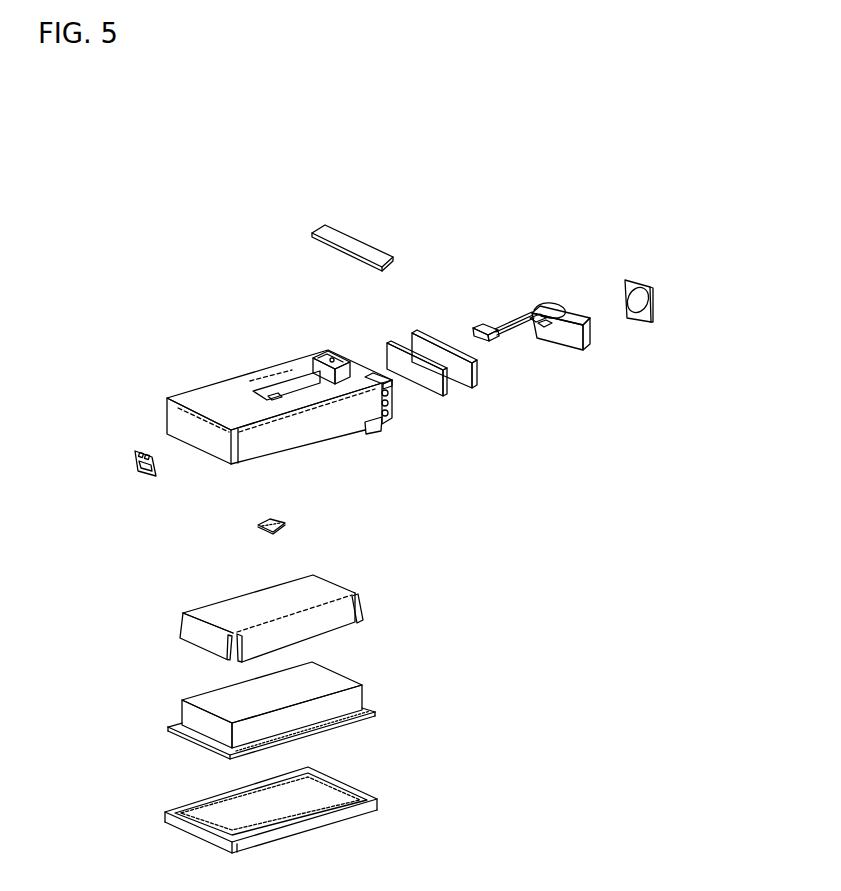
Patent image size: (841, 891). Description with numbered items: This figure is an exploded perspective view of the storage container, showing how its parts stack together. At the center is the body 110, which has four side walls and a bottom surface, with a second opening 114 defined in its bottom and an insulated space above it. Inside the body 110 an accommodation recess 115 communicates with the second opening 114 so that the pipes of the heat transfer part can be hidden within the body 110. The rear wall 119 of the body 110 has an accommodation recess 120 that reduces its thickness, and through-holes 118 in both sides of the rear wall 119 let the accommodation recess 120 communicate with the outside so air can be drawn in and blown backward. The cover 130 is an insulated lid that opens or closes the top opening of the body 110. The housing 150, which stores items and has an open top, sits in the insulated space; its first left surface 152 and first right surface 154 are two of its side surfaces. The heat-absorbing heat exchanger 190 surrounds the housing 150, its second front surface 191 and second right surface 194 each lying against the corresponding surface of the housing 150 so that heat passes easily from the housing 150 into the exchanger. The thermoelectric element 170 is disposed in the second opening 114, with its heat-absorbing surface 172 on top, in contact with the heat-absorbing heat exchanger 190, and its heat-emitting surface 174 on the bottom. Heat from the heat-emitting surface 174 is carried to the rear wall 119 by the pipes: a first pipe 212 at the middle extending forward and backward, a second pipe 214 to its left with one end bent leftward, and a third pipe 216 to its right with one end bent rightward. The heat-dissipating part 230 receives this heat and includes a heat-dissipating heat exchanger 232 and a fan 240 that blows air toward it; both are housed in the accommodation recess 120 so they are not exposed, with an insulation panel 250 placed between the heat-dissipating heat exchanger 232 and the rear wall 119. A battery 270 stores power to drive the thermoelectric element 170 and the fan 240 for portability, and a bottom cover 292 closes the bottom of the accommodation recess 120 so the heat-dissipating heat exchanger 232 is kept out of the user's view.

The body 110 is at (148, 412).
The second opening 114 is at (277, 393).
The accommodation recess 115 is at (291, 382).
The through-holes 118 is at (386, 416).
The rear wall 119 is at (382, 430).
The accommodation recess 120 is at (328, 352).
The cover 130 is at (148, 825).
The housing 150 is at (235, 716).
The first left surface 152 is at (213, 735).
The first right surface 154 is at (348, 705).
The thermoelectric element 170 is at (314, 527).
The heat-absorbing surface 172 is at (283, 521).
The heat-emitting surface 174 is at (334, 508).
The heat-absorbing heat exchanger 190 is at (240, 625).
The second front surface 191 is at (215, 643).
The second right surface 194 is at (345, 622).
The first pipe 212 is at (510, 337).
The second pipe 214 is at (507, 320).
The third pipe 216 is at (535, 326).
The heat-dissipating part 230 is at (550, 282).
The heat-dissipating heat exchanger 232 is at (589, 334).
The fan 240 is at (656, 303).
The insulation panel 250 is at (438, 390).
The battery 270 is at (475, 388).
The bottom cover 292 is at (360, 247).